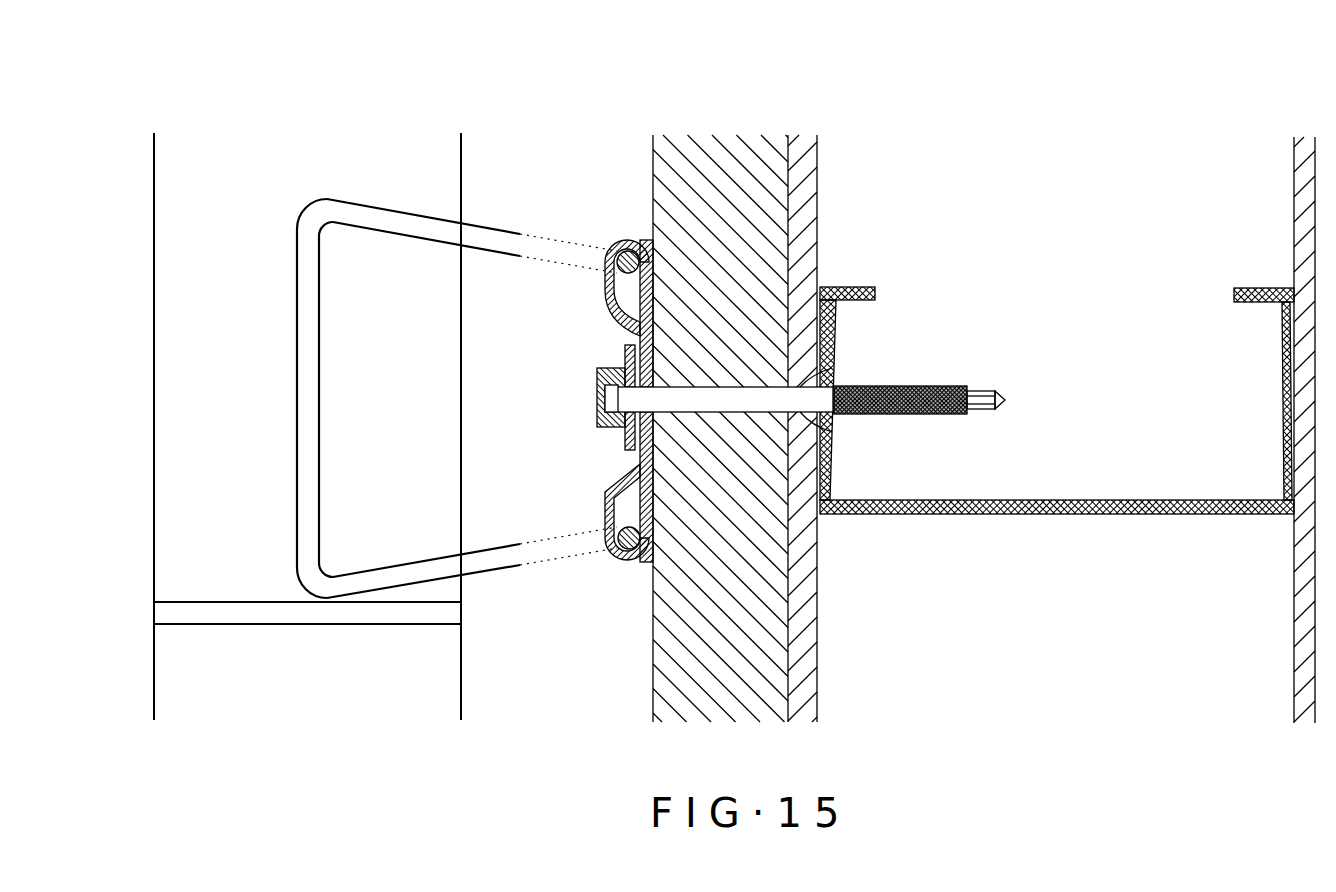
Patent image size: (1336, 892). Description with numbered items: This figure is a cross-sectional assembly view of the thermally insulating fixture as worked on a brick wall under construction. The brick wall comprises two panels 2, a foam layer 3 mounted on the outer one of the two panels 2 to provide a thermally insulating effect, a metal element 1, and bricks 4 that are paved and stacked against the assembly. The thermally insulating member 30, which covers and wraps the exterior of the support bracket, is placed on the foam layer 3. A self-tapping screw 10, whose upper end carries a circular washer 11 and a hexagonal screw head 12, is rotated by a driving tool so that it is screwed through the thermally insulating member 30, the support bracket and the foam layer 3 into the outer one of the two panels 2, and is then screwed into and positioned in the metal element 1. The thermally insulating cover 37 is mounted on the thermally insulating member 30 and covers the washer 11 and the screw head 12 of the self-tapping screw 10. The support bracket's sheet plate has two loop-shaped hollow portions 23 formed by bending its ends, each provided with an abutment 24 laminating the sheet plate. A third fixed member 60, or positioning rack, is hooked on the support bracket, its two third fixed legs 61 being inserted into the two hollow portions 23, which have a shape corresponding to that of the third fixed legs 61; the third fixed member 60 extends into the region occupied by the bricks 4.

The metal element 1 is at (1055, 514).
The panels 2 is at (800, 150).
The foam layer 3 is at (712, 162).
The bricks 4 is at (297, 170).
The self-tapping screw 10 is at (763, 378).
The washer 11 is at (598, 423).
The screw head 12 is at (600, 372).
The hollow portions 23 is at (630, 288).
The abutment 24 is at (646, 328).
The thermally insulating member 30 is at (586, 401).
The thermally insulating cover 37 is at (596, 398).
The third fixed member 60 is at (313, 381).
The third fixed legs 61 is at (631, 250).